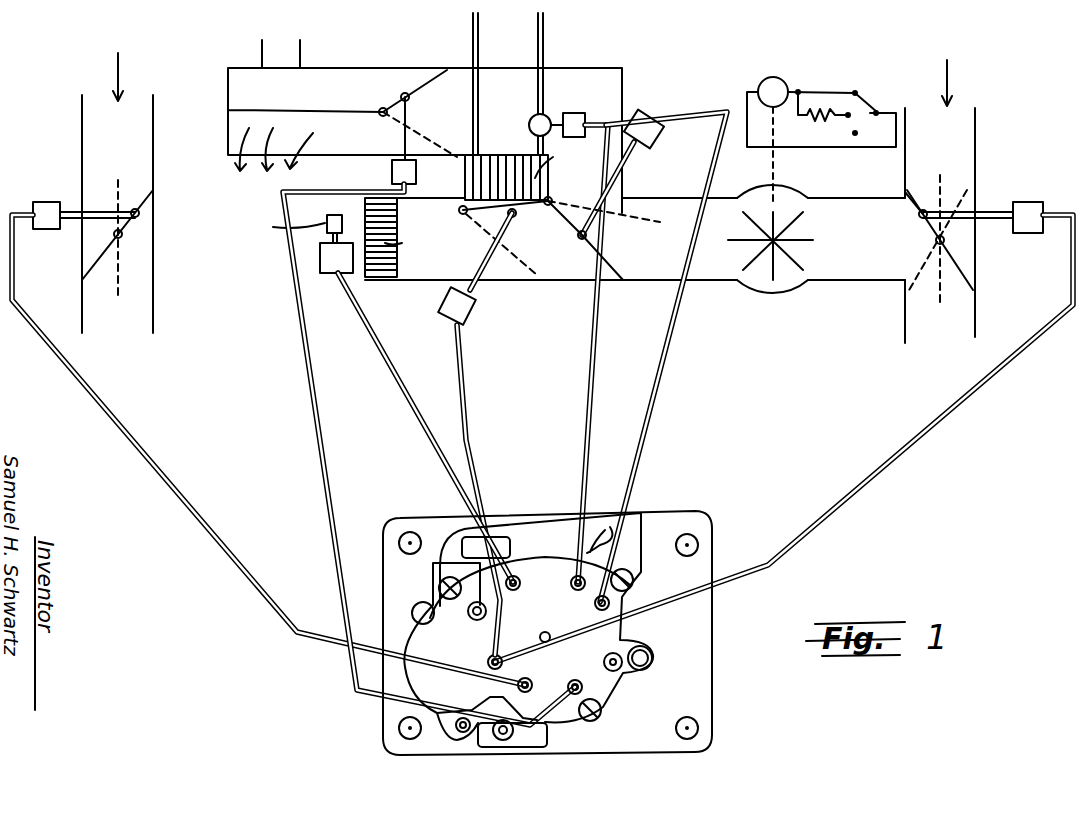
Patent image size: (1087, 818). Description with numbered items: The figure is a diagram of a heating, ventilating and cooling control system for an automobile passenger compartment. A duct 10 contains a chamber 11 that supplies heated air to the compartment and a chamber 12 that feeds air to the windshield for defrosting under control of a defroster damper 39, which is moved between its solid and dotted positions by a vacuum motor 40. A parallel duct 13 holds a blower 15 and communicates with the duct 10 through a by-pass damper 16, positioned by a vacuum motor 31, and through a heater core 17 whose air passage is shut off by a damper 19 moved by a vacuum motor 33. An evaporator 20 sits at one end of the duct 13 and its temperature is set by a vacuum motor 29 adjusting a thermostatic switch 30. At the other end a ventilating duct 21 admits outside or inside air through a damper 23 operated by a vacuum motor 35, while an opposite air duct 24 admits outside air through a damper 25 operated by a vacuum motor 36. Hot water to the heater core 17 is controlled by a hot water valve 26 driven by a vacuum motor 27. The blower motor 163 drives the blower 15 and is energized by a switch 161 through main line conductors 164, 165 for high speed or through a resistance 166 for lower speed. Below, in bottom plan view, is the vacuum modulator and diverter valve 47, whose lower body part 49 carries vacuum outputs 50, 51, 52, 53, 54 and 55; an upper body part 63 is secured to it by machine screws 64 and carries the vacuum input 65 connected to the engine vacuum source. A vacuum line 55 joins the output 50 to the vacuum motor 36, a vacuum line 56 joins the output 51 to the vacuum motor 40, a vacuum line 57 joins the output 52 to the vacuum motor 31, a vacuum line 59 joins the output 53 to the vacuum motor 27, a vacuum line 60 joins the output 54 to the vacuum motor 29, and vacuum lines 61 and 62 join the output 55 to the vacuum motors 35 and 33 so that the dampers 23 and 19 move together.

The duct 10 is at (497, 80).
The chamber 11 is at (228, 150).
The chamber 12 is at (244, 88).
The duct 13 is at (714, 283).
The blower 15 is at (775, 210).
The by-pass damper 16 is at (613, 263).
The heater core 17 is at (503, 165).
The damper 19 is at (483, 217).
The evaporator 20 is at (366, 213).
The ventilating duct 21 is at (975, 128).
The damper 23 is at (957, 262).
The air duct 24 is at (153, 176).
The damper 25 is at (98, 267).
The hot water valve 26 is at (528, 118).
The vacuum motor 27 is at (573, 113).
The vacuum motor 29 is at (317, 255).
The thermostatic switch 30 is at (322, 230).
The vacuum motor 31 is at (665, 137).
The vacuum motor 33 is at (478, 305).
The vacuum motor 35 is at (1034, 210).
The vacuum motor 36 is at (46, 210).
The defroster damper 39 is at (435, 80).
The vacuum motor 40 is at (416, 172).
The vacuum modulator and diverter valve 47 is at (637, 527).
The lower body part 49 is at (400, 630).
The vacuum output 50 is at (528, 683).
The vacuum output 51 is at (578, 684).
The vacuum output 52 is at (595, 604).
The vacuum output 53 is at (576, 587).
The vacuum output 54 is at (521, 583).
The vacuum output 55 is at (175, 483).
The vacuum line 56 is at (320, 443).
The vacuum line 57 is at (648, 410).
The vacuum line 59 is at (587, 422).
The vacuum line 60 is at (415, 413).
The vacuum line 61 is at (902, 447).
The vacuum line 62 is at (467, 417).
The upper body part 63 is at (620, 672).
The machine screws 64 is at (698, 532).
The vacuum input 65 is at (645, 657).
The switch 161 is at (870, 100).
The blower motor 163 is at (778, 77).
The main line conductor 164 is at (885, 113).
The main line conductor 165 is at (865, 148).
The resistance 166 is at (820, 118).